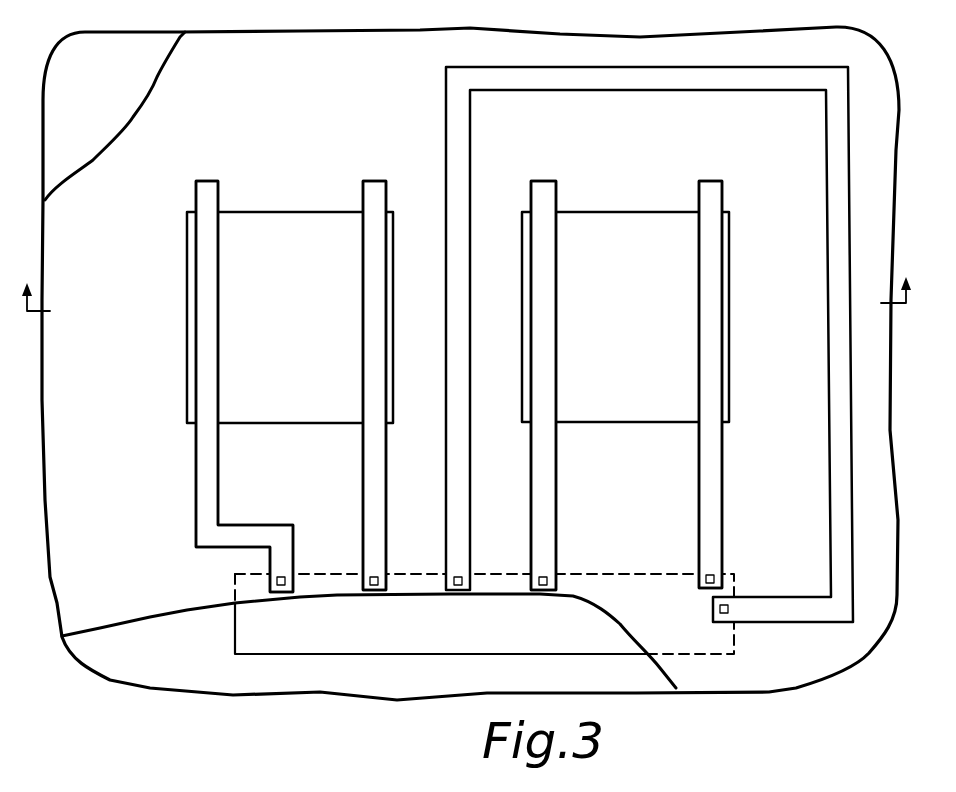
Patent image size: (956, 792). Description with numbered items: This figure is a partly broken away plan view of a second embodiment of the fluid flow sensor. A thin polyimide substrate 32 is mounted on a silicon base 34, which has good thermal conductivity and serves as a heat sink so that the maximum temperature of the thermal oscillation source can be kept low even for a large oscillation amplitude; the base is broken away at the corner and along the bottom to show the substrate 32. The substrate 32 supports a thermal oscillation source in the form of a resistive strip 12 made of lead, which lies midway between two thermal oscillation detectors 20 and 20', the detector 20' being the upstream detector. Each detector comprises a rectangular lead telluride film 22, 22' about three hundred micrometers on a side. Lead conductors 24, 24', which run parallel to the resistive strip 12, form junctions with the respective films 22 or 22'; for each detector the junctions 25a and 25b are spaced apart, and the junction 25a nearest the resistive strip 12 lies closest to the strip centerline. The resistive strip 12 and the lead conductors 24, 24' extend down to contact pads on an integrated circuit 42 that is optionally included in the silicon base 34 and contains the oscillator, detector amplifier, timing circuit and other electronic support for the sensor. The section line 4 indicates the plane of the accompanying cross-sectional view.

The section line 4 is at (466, 284).
The resistive strip 12 is at (457, 213).
The thermal oscillation detector 20 is at (625, 361).
The upstream detector 20' is at (290, 361).
The lead telluride film 22 is at (625, 345).
The lead telluride film 22' is at (290, 292).
The lead conductors 24 is at (626, 385).
The lead conductors 24' is at (291, 386).
The junction 25a is at (378, 405).
The junction 25b is at (220, 394).
The polyimide substrate 32 is at (268, 70).
The silicon base 34 is at (96, 78).
The integrated circuit 42 is at (358, 635).